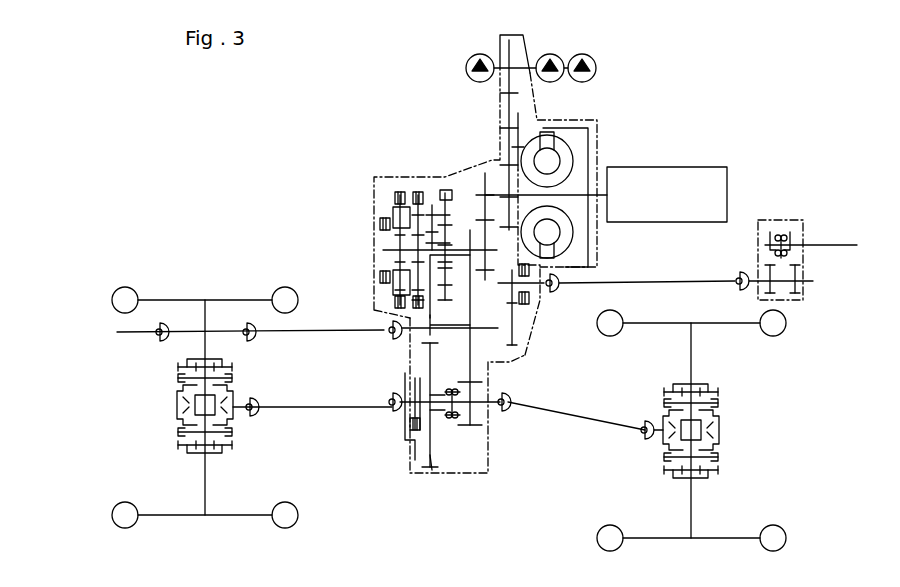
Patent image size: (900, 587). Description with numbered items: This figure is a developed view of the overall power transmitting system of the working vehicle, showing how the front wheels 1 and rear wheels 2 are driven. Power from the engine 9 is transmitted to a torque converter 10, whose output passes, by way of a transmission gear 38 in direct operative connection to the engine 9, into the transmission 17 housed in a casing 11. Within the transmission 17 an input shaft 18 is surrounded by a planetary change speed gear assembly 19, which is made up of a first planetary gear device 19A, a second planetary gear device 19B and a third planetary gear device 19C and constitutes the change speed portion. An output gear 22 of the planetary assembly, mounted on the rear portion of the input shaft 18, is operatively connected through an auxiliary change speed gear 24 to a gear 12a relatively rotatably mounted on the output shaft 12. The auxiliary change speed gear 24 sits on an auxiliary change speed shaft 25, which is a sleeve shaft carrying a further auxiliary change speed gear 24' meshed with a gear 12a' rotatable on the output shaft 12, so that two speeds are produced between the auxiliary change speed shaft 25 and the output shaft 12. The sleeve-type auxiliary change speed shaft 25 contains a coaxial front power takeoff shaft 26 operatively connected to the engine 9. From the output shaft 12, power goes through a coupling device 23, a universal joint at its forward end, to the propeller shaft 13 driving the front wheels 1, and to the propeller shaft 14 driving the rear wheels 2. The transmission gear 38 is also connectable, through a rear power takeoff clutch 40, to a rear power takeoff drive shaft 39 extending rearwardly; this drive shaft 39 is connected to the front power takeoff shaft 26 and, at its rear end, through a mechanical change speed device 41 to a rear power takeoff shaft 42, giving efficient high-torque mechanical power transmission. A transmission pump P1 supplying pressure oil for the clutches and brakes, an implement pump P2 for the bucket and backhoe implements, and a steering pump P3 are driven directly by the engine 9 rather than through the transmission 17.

The front wheels 1 is at (128, 297).
The rear wheels 2 is at (610, 337).
The engine 9 is at (675, 167).
The torque converter 10 is at (567, 143).
The casing 11 is at (490, 470).
The output shaft 12 is at (392, 398).
The gear 12a is at (486, 339).
The gear 12a' is at (409, 479).
The propeller shaft 13 is at (283, 410).
The propeller shaft 14 is at (588, 420).
The transmission 17 is at (388, 142).
The input shaft 18 is at (383, 250).
The planetary change speed gear assembly 19 is at (415, 178).
The first planetary gear device 19A is at (400, 185).
The second planetary gear device 19B is at (437, 208).
The third planetary gear device 19C is at (388, 200).
The output gear 22 is at (485, 248).
The coupling device 23 is at (390, 418).
The auxiliary change speed gear 24 is at (450, 343).
The further auxiliary change speed gear 24' is at (263, 339).
The auxiliary change speed shaft 25 is at (438, 405).
The front power takeoff shaft 26 is at (498, 330).
The transmission gear 38 is at (490, 160).
The rear power takeoff drive shaft 39 is at (660, 280).
The rear power takeoff clutch 40 is at (540, 298).
The mechanical change speed device 41 is at (783, 228).
The rear power takeoff shaft 42 is at (828, 245).
The transmission pump P1 is at (470, 62).
The implement pump P2 is at (550, 54).
The steering pump P3 is at (596, 68).